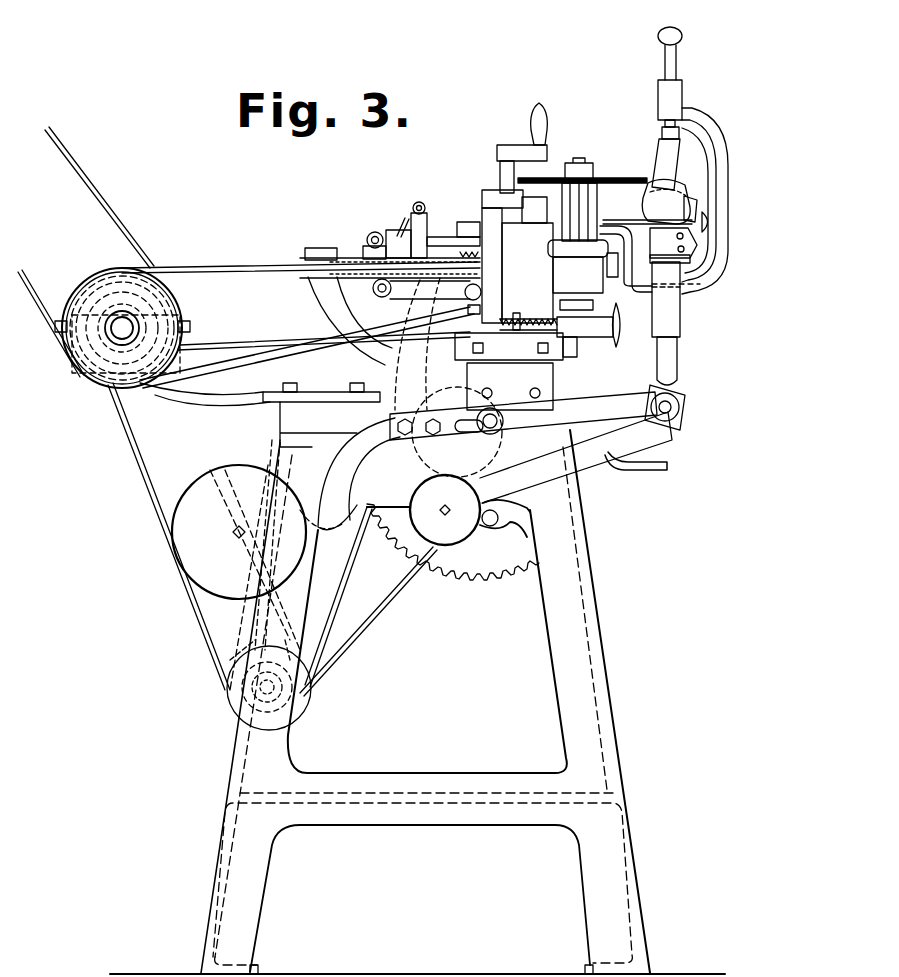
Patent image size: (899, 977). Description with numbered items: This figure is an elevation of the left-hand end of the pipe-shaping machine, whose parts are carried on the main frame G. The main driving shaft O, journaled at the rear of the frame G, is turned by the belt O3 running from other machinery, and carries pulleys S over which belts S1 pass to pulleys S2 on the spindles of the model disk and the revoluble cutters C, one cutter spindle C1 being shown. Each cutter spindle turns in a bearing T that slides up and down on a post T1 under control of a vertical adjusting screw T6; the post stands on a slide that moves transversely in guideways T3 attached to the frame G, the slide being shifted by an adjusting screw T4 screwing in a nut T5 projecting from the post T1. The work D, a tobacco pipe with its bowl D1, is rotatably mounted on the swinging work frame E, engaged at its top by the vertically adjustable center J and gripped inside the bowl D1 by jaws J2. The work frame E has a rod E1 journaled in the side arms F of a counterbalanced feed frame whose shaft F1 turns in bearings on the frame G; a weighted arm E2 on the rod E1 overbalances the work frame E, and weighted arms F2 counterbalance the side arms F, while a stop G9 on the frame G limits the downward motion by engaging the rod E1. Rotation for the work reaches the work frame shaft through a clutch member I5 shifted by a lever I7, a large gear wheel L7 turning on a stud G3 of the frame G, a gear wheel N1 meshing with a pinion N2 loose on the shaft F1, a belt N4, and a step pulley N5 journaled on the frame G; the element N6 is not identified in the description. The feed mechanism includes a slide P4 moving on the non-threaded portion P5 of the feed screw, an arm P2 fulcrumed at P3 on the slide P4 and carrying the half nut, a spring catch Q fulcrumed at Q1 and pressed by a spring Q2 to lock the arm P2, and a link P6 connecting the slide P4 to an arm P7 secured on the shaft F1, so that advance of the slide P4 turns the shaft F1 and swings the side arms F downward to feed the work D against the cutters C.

The main frame G is at (607, 680).
The main driving shaft O is at (125, 326).
The pulleys S is at (104, 290).
The belt O3 is at (97, 195).
The belts S1 is at (258, 265).
The pinion N2 is at (140, 452).
The arm P7 is at (385, 385).
The link P6 is at (400, 296).
The fulcrum of catch Q1 is at (422, 203).
The spring catch Q is at (427, 220).
The spring Q2 is at (401, 229).
The fulcrum of arm P3 is at (393, 232).
The slide P4 is at (368, 246).
The non-threaded portion of feed screw P5 is at (364, 250).
The arm P2 is at (455, 240).
The vertical adjusting screw T6 is at (505, 168).
The post T1 is at (521, 225).
The bearing T is at (550, 215).
The revoluble cutters C is at (545, 177).
The cutter spindle C1 is at (580, 158).
The pulleys S2 is at (553, 262).
The nut T5 is at (520, 313).
The adjusting screw T4 is at (600, 337).
The guideways T3 is at (523, 360).
The work D is at (657, 165).
The bowl of the work D1 is at (658, 205).
The clutch member I5 is at (690, 195).
The shifting lever I7 is at (660, 245).
The jaws J2 is at (690, 259).
The center J is at (665, 58).
The work frame E is at (728, 200).
The rod E1 is at (680, 405).
The side arms F is at (594, 395).
The shaft F1 is at (495, 412).
The weighted arms F2 is at (340, 483).
The weighted arm E2 is at (545, 482).
The large gear wheel N1 is at (400, 530).
The belt N4 is at (368, 628).
The step pulley N5 is at (244, 687).
The pulley rim N6 is at (295, 710).
The large gear wheel L7 is at (497, 578).
The stud G3 is at (490, 526).
The stop G9 is at (640, 470).